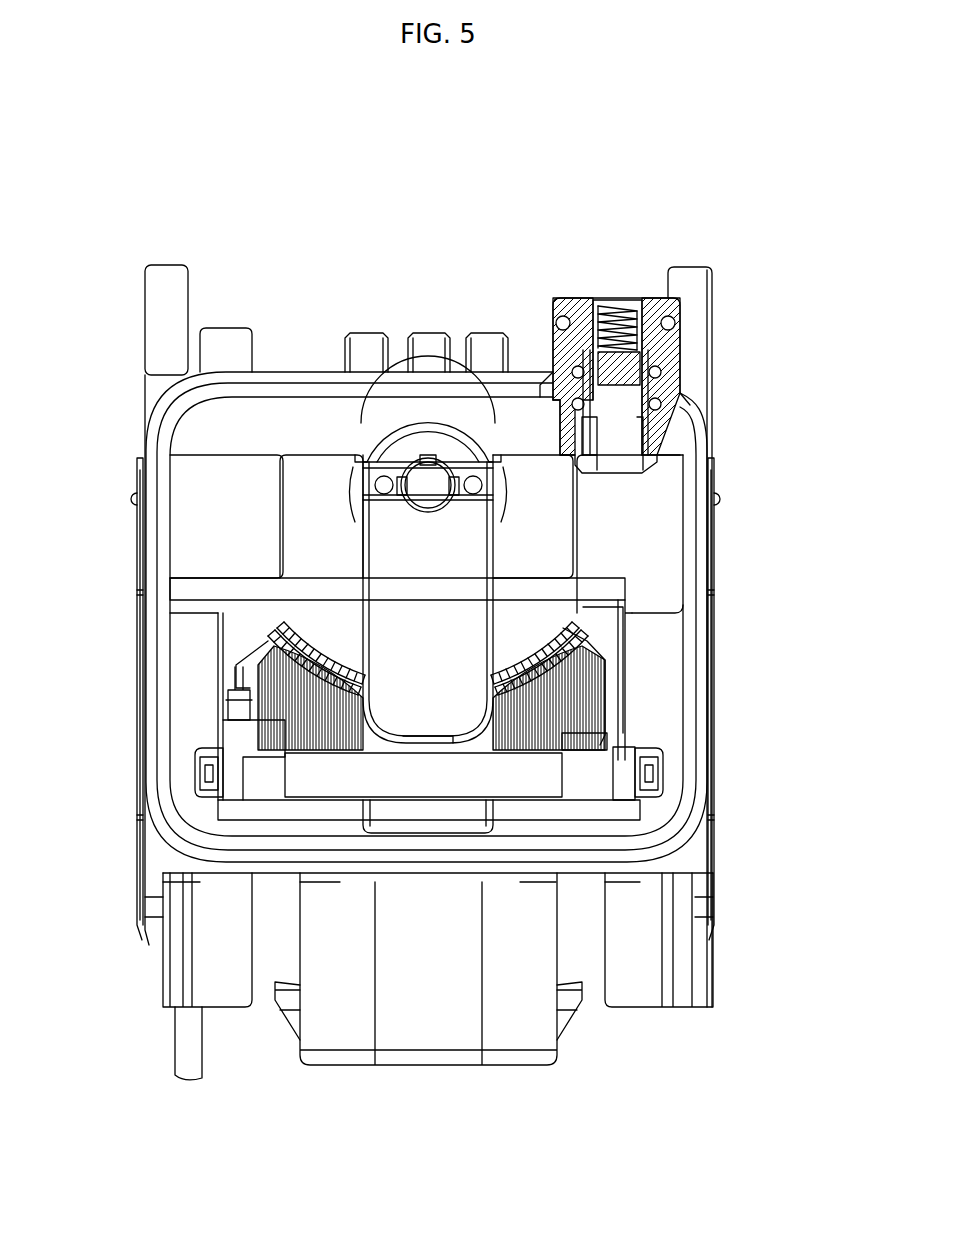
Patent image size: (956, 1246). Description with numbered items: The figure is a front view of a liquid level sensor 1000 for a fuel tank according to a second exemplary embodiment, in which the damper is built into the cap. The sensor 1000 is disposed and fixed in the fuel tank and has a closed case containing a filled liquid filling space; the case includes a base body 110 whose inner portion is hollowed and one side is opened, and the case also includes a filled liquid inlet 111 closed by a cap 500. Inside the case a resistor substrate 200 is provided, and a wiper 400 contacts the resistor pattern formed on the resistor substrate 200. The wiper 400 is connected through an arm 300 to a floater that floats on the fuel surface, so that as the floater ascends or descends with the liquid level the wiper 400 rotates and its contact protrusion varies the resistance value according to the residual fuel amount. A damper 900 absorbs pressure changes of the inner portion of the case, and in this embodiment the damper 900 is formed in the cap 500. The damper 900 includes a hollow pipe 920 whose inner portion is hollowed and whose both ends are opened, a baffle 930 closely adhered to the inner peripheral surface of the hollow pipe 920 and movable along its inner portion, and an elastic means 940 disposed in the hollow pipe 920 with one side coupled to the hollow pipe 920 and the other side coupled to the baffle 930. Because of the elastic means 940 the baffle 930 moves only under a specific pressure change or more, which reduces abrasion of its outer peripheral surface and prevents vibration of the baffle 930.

The liquid level sensor 1000 is at (305, 183).
The base body 110 is at (716, 700).
The filled liquid inlet 111 is at (660, 354).
The resistor substrate 200 is at (597, 720).
The arm 300 is at (183, 1038).
The wiper 400 is at (470, 638).
The cap 500 is at (556, 290).
The damper 900 is at (599, 322).
The hollow pipe 920 is at (650, 300).
The baffle 930 is at (625, 403).
The elastic means 940 is at (598, 335).